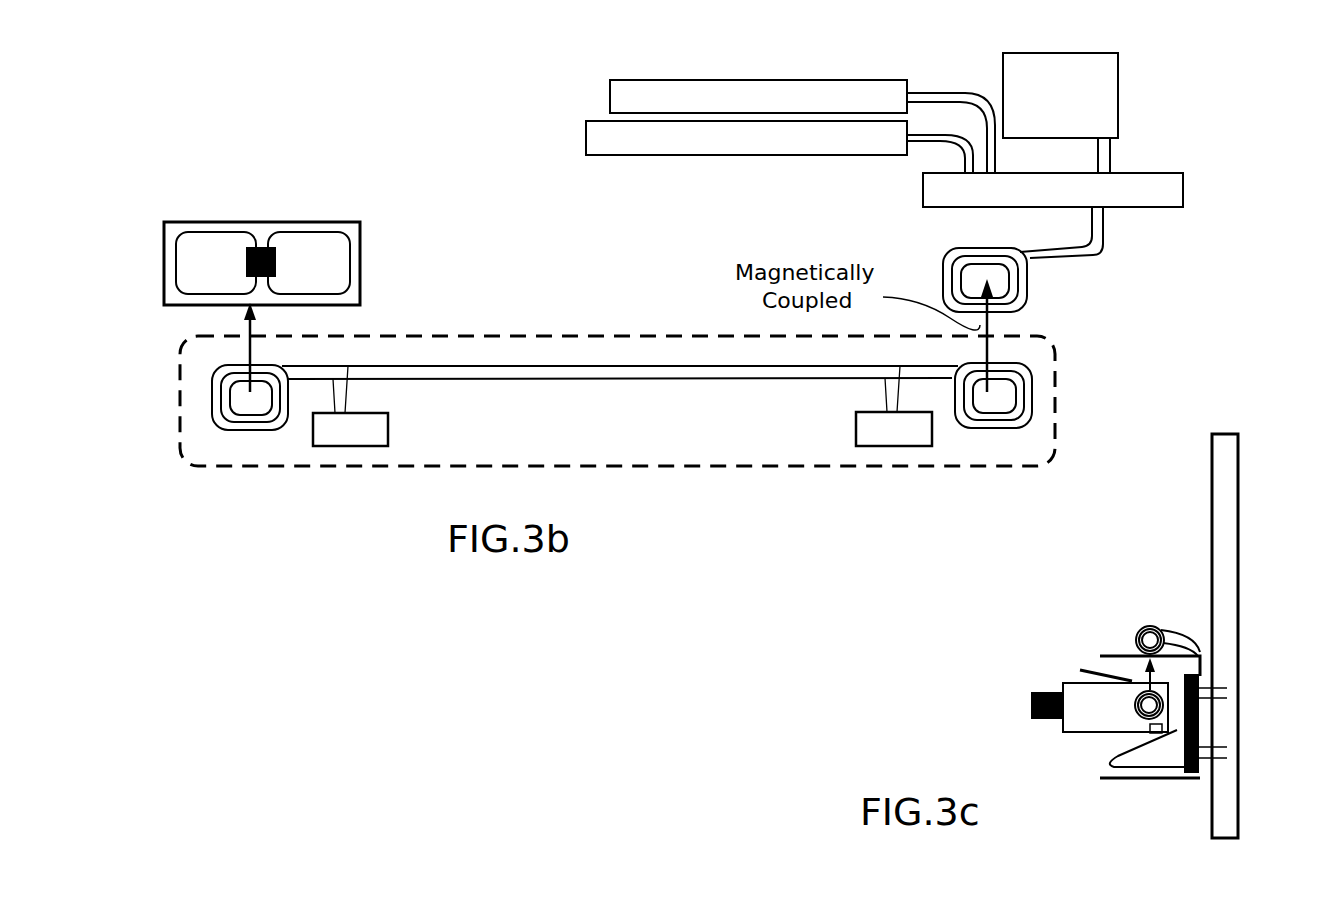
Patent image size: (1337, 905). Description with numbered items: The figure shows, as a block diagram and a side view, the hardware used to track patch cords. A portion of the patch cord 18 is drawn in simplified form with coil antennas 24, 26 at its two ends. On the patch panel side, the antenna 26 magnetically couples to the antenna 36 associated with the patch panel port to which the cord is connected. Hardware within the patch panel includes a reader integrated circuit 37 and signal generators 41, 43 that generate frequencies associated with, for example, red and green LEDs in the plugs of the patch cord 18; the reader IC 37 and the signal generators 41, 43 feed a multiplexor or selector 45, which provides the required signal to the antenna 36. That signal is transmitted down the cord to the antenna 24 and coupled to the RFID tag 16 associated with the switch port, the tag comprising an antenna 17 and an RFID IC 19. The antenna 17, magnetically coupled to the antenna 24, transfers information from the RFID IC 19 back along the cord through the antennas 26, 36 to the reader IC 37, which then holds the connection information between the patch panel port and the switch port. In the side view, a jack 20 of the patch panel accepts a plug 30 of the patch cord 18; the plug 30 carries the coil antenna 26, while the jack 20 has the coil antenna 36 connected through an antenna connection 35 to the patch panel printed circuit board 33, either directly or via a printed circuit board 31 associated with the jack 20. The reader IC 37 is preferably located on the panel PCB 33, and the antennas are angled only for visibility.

In FIG. 3B, the RFID tag 16 is at (273, 195).
In FIG. 3B, the antenna 17 is at (217, 233).
In FIG. 3B, the patch cord 18 is at (617, 462).
In FIG. 3B, the RFID IC 19 is at (276, 262).
In FIG. 3C, the jack 20 is at (1152, 746).
In FIG. 3B, the antenna 24 is at (253, 420).
In FIG. 3B, the antenna 26 is at (994, 418).
In FIG. 3C, the antenna 26 is at (1134, 704).
In FIG. 3C, the plug 30 is at (1085, 720).
In FIG. 3C, the printed circuit board 31 is at (1205, 772).
In FIG. 3C, the printed circuit board 33 is at (1238, 556).
In FIG. 3C, the antenna connection 35 is at (1190, 646).
In FIG. 3B, the antenna 36 is at (1008, 277).
In FIG. 3C, the antenna 36 is at (1137, 630).
In FIG. 3B, the reader integrated circuit 37 is at (1118, 98).
In FIG. 3B, the signal generator 41 is at (610, 92).
In FIG. 3B, the signal generator 43 is at (586, 143).
In FIG. 3B, the multiplexor or selector 45 is at (1183, 190).